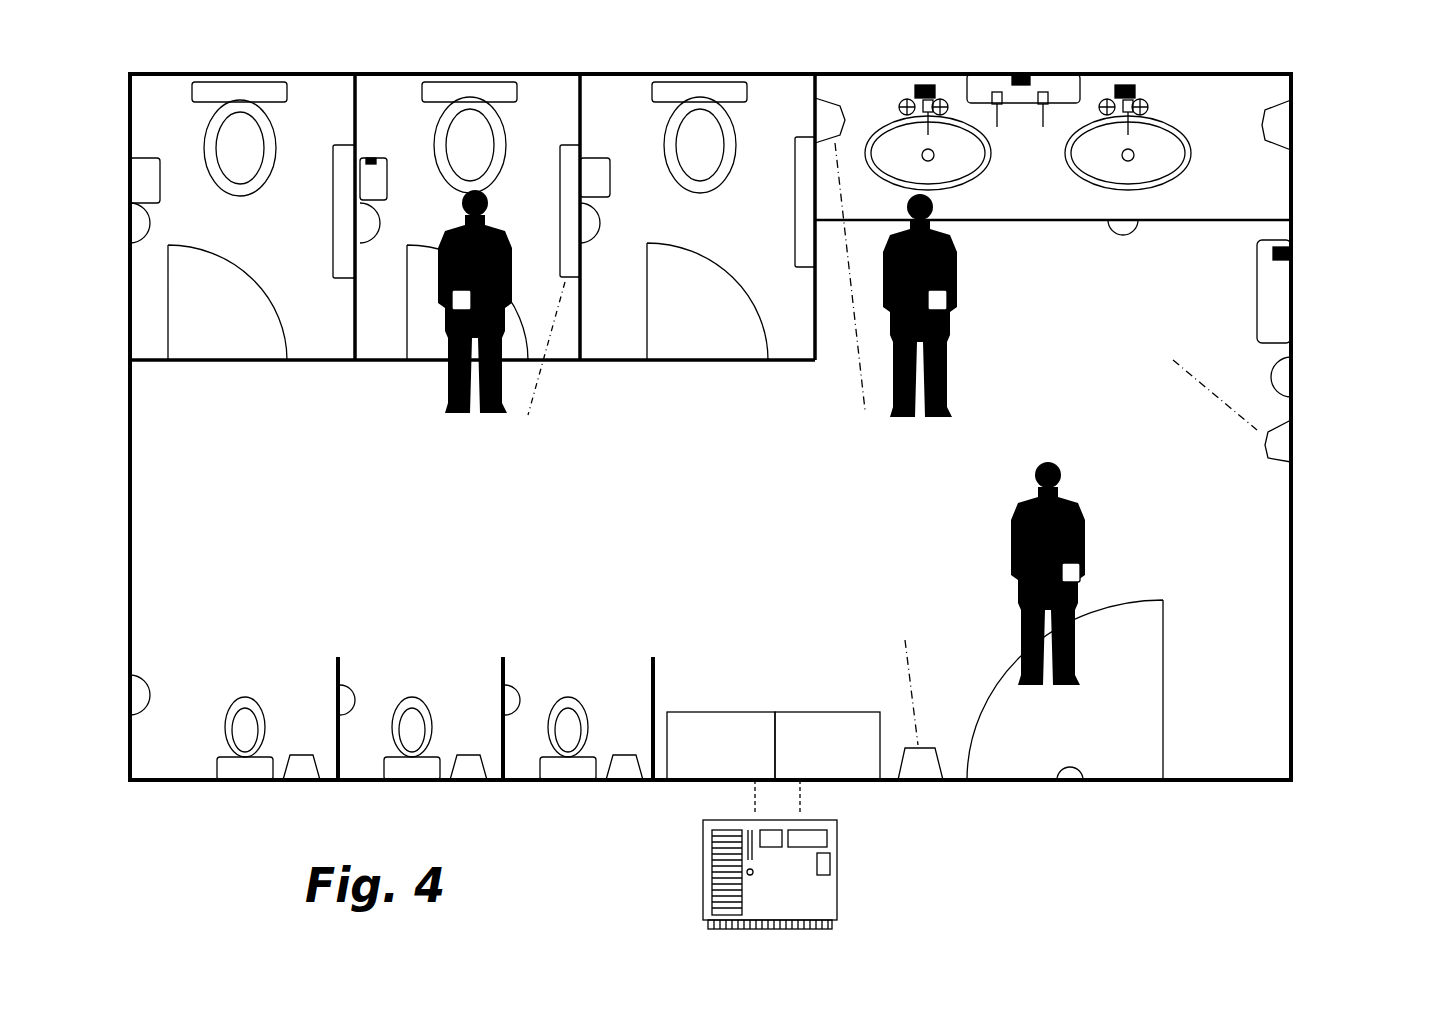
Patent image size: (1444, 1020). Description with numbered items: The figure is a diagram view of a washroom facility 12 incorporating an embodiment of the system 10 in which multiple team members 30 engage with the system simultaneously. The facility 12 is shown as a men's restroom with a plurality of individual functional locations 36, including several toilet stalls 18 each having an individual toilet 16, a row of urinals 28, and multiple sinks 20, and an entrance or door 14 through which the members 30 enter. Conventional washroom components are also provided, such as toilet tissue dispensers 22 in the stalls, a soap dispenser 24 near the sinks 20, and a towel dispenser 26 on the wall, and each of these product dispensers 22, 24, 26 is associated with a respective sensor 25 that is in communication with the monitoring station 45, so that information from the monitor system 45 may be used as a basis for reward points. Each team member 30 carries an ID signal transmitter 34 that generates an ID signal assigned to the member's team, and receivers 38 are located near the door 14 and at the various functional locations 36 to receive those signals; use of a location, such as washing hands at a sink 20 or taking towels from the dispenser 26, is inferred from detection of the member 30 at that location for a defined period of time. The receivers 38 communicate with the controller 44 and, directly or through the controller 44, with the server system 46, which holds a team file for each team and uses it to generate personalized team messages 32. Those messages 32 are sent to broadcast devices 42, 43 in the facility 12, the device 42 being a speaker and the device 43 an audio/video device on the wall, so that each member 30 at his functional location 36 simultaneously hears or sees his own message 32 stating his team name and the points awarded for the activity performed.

The system 10 is at (1331, 110).
The washroom facility 12 is at (168, 490).
The entrance or door 14 is at (1165, 700).
The toilet 16 is at (722, 175).
The individual stall 18 is at (323, 338).
The sink 20 is at (1165, 115).
The toilet tissue dispenser 22 is at (388, 180).
The soap dispenser 24 is at (1043, 128).
The sensor 25 is at (370, 160).
The towel dispenser 26 is at (1293, 295).
The urinal 28 is at (422, 698).
The team member 30 is at (460, 372).
The personalized message 32 is at (572, 490).
The ID signal transmitter 34 is at (452, 298).
The functional location 36 is at (1188, 138).
The receiver 38 is at (152, 226).
The broadcast device 42 is at (1293, 128).
The audio/video broadcast device 43 is at (563, 192).
The controller 44 is at (685, 712).
The monitoring station 45 is at (825, 712).
The server system 46 is at (837, 865).